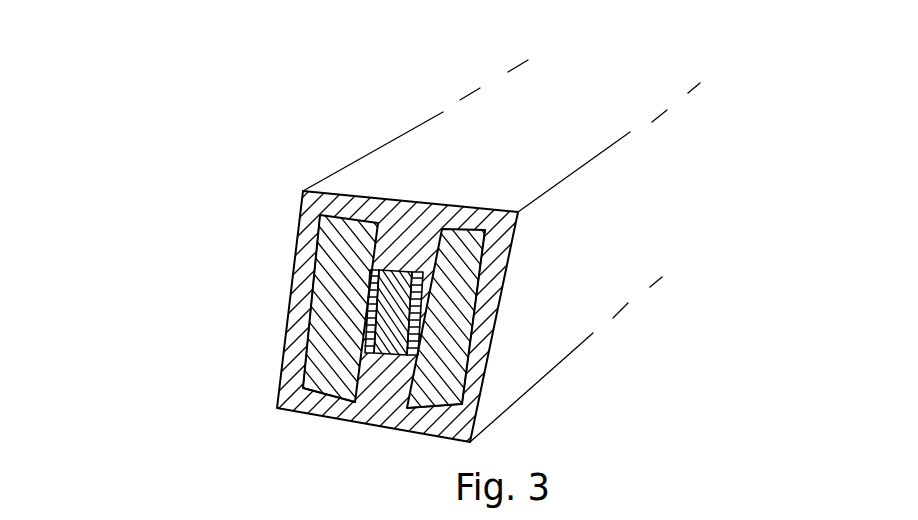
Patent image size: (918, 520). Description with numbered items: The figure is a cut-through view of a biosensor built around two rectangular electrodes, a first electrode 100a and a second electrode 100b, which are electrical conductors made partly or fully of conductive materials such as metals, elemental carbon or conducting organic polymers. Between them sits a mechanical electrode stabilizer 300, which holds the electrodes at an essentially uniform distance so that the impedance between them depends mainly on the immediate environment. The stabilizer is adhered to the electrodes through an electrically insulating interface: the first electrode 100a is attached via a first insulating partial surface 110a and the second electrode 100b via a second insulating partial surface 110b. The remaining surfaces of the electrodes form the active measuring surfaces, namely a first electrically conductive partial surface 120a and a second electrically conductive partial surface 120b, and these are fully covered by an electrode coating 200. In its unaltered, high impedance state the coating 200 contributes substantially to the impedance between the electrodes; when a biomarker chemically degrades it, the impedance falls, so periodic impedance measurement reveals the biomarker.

The electrode coating 200 is at (410, 220).
The mechanical electrode stabilizer 300 is at (393, 295).
The first electrode 100a is at (337, 287).
The second electrode 100b is at (450, 310).
The first insulating partial surface 110a is at (372, 335).
The second insulating partial surface 110b is at (413, 343).
The first electrically conductive partial surface 120a is at (307, 365).
The second electrically conductive partial surface 120b is at (457, 398).